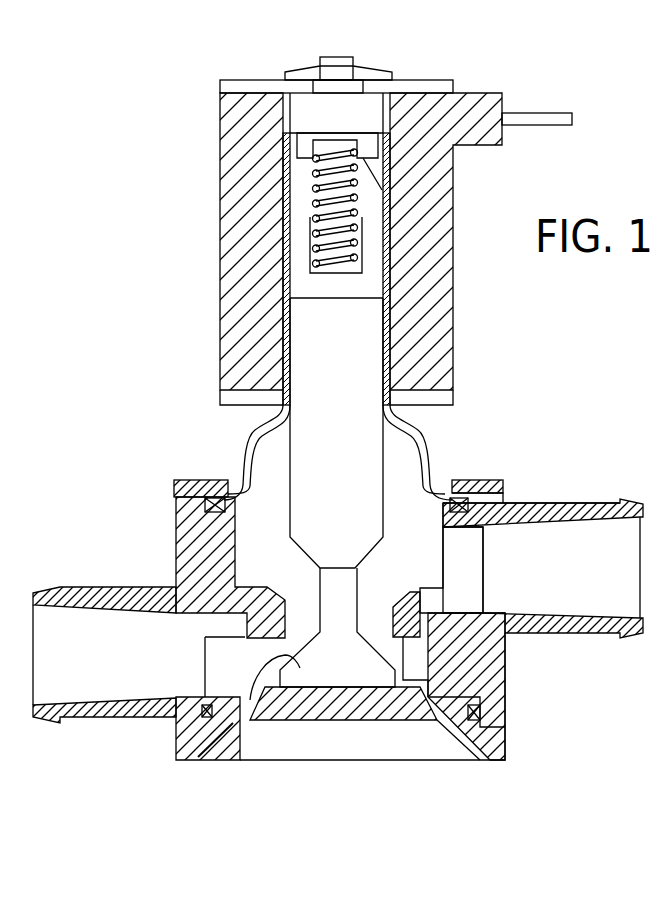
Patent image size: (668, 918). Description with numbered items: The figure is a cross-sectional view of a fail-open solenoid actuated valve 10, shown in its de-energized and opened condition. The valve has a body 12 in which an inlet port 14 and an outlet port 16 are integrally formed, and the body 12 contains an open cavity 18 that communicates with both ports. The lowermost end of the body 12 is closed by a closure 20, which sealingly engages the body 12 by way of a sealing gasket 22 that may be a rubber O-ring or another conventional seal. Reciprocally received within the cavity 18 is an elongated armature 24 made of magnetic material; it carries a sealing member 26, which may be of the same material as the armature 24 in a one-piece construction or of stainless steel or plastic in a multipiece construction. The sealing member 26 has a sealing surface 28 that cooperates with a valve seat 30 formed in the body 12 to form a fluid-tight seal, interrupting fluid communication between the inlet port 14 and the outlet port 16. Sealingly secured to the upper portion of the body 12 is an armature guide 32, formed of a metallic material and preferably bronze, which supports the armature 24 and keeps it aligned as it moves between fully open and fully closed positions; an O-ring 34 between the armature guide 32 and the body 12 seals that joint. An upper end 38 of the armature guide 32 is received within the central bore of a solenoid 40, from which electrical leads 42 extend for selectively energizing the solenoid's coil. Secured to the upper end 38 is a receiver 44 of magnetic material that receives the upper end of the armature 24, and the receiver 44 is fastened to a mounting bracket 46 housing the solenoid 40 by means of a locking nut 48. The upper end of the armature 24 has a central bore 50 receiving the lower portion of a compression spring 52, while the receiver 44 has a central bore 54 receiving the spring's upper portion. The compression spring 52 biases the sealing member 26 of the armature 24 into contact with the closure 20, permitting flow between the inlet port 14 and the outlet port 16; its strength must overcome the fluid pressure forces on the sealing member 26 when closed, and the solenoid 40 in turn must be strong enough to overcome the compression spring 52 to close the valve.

The solenoid actuated valve 10 is at (532, 376).
The body 12 is at (185, 540).
The inlet port 14 is at (120, 690).
The outlet port 16 is at (585, 535).
The open cavity 18 is at (428, 478).
The closure 20 is at (487, 753).
The sealing gasket 22 is at (487, 712).
The elongated armature 24 is at (298, 462).
The sealing member 26 is at (313, 677).
The sealing surface 28 is at (253, 687).
The valve seat 30 is at (392, 632).
The armature guide 32 is at (428, 430).
The O-ring 34 is at (505, 502).
The upper end of the armature guide 38 is at (290, 197).
The solenoid 40 is at (440, 298).
The electrical leads 42 is at (567, 111).
The receiver 44 is at (300, 118).
The mounting bracket 46 is at (450, 84).
The locking nut 48 is at (387, 72).
The central bore 50 is at (313, 263).
The compression spring 52 is at (387, 206).
The central bore 54 is at (313, 162).